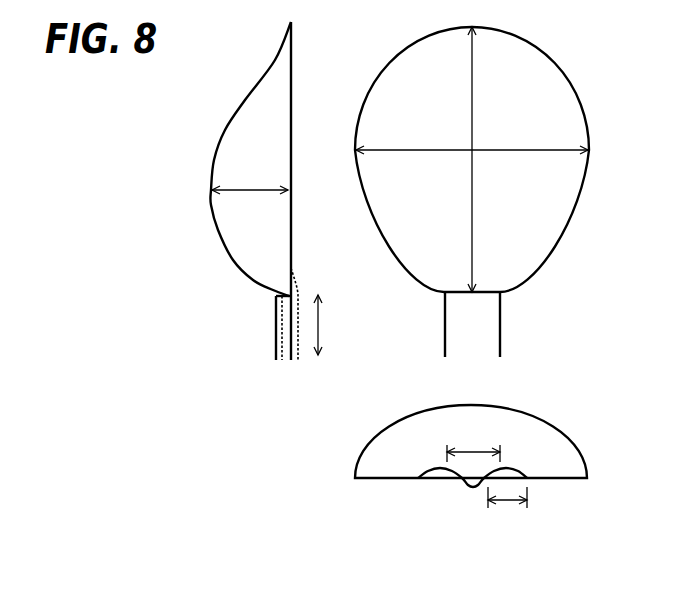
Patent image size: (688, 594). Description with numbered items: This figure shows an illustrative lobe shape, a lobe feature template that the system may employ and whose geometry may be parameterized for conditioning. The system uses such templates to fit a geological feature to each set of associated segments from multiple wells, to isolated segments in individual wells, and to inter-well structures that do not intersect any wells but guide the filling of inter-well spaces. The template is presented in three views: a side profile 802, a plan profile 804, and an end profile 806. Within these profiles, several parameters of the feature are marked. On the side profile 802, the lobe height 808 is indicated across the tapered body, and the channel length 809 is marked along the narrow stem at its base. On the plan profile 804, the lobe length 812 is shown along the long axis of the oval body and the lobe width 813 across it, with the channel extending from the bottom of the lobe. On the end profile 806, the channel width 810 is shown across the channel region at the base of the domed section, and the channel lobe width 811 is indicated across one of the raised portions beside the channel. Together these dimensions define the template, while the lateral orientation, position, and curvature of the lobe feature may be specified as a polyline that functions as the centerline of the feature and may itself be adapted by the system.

The side profile 802 is at (245, 191).
The plan profile 804 is at (475, 192).
The end profile 806 is at (475, 446).
The lobe height 808 is at (250, 177).
The channel length 809 is at (337, 325).
The channel width 810 is at (473, 439).
The channel lobe width 811 is at (505, 513).
The lobe length 812 is at (453, 159).
The lobe width 813 is at (472, 164).